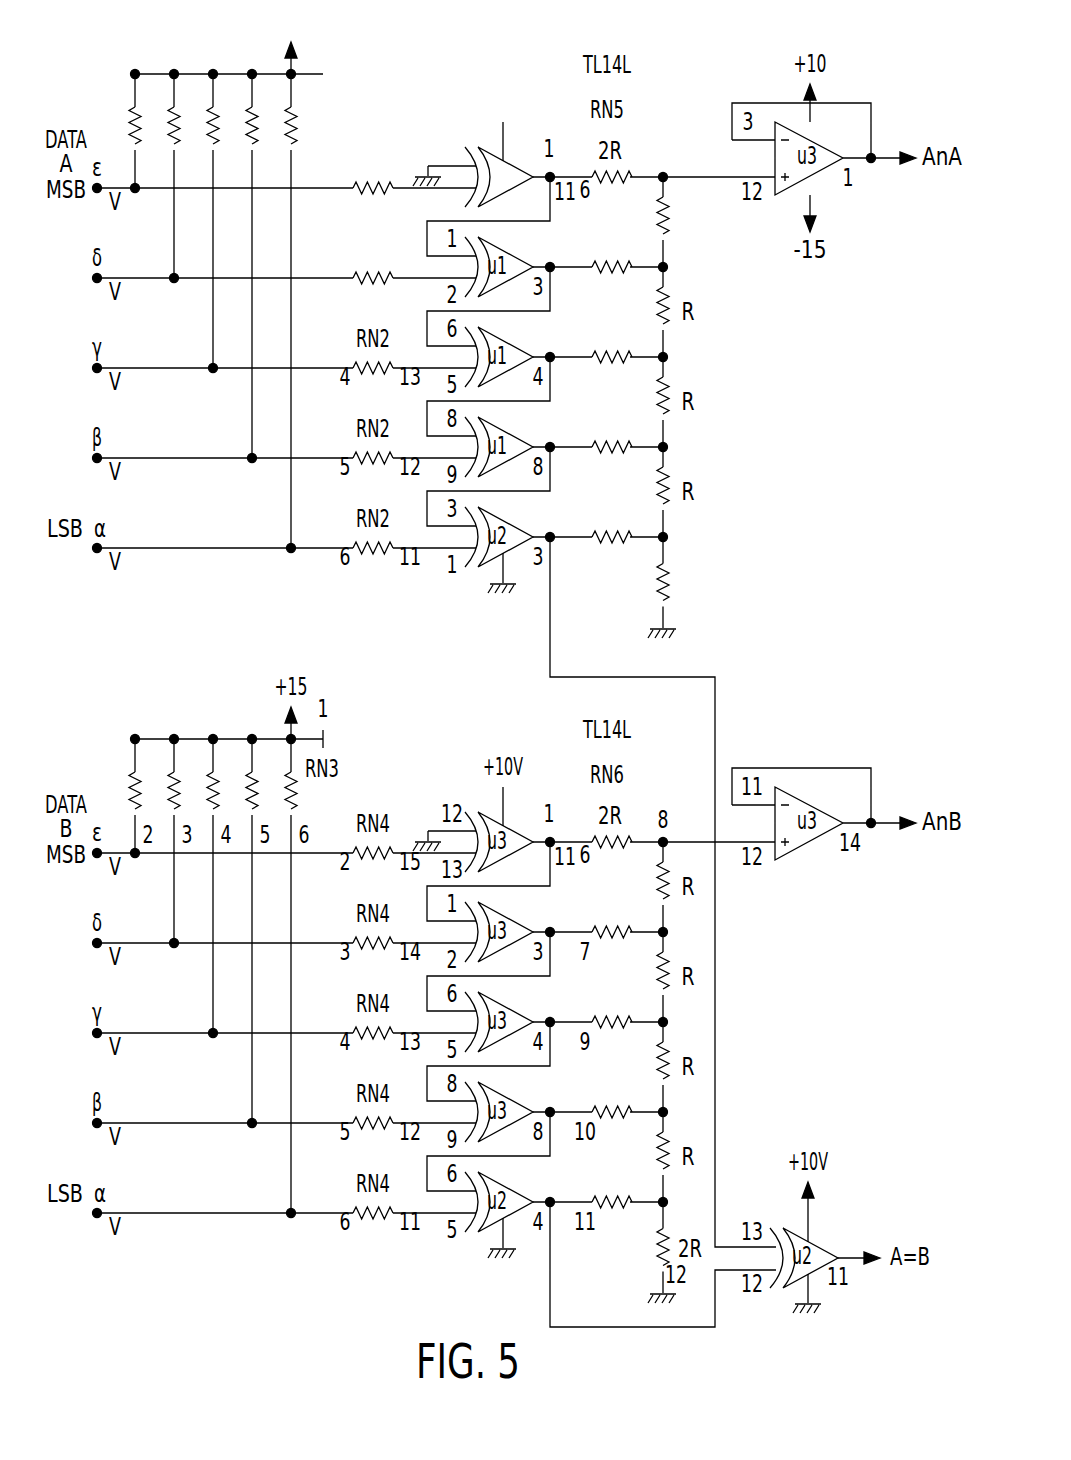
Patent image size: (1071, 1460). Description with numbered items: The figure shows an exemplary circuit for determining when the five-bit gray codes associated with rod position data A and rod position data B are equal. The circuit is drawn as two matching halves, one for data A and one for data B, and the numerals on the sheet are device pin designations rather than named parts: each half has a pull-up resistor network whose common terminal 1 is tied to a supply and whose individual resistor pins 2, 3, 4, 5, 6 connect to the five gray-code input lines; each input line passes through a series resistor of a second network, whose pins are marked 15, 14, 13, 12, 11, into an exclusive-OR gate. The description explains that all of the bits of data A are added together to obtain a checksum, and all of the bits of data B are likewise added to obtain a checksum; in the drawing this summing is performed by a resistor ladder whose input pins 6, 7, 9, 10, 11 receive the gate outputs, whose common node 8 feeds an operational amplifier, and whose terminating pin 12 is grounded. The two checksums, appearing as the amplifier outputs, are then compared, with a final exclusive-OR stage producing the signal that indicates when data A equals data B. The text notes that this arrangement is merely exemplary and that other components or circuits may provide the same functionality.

The resistor network RN1 common pin 1 is at (323, 83).
The RN1 pull-up resistor pin 2 is at (141, 131).
The RN1 pull-up resistor pin 3 is at (180, 176).
The RN1 pull-up resistor pin 4 is at (219, 221).
The RN1 pull-up resistor pin 5 is at (258, 266).
The RN1 pull-up resistor pin 6 is at (297, 311).
The RN5 2R ladder resistor pin 7 is at (606, 264).
The RN5 ladder R resistor at node 8 is at (676, 204).
The RN5 2R ladder resistor pin 9 is at (606, 354).
The RN5 2R ladder resistor pin 10 is at (603, 444).
The RN5 2R ladder resistor pin 11 is at (603, 534).
The RN5 terminating 2R resistor pin 12 to ground 12 is at (675, 587).
The XOR gate u1 with input pin 13 is at (481, 153).
The RN2 series resistor pin 14 is at (408, 268).
The RN2 series resistor pin 15 is at (408, 178).